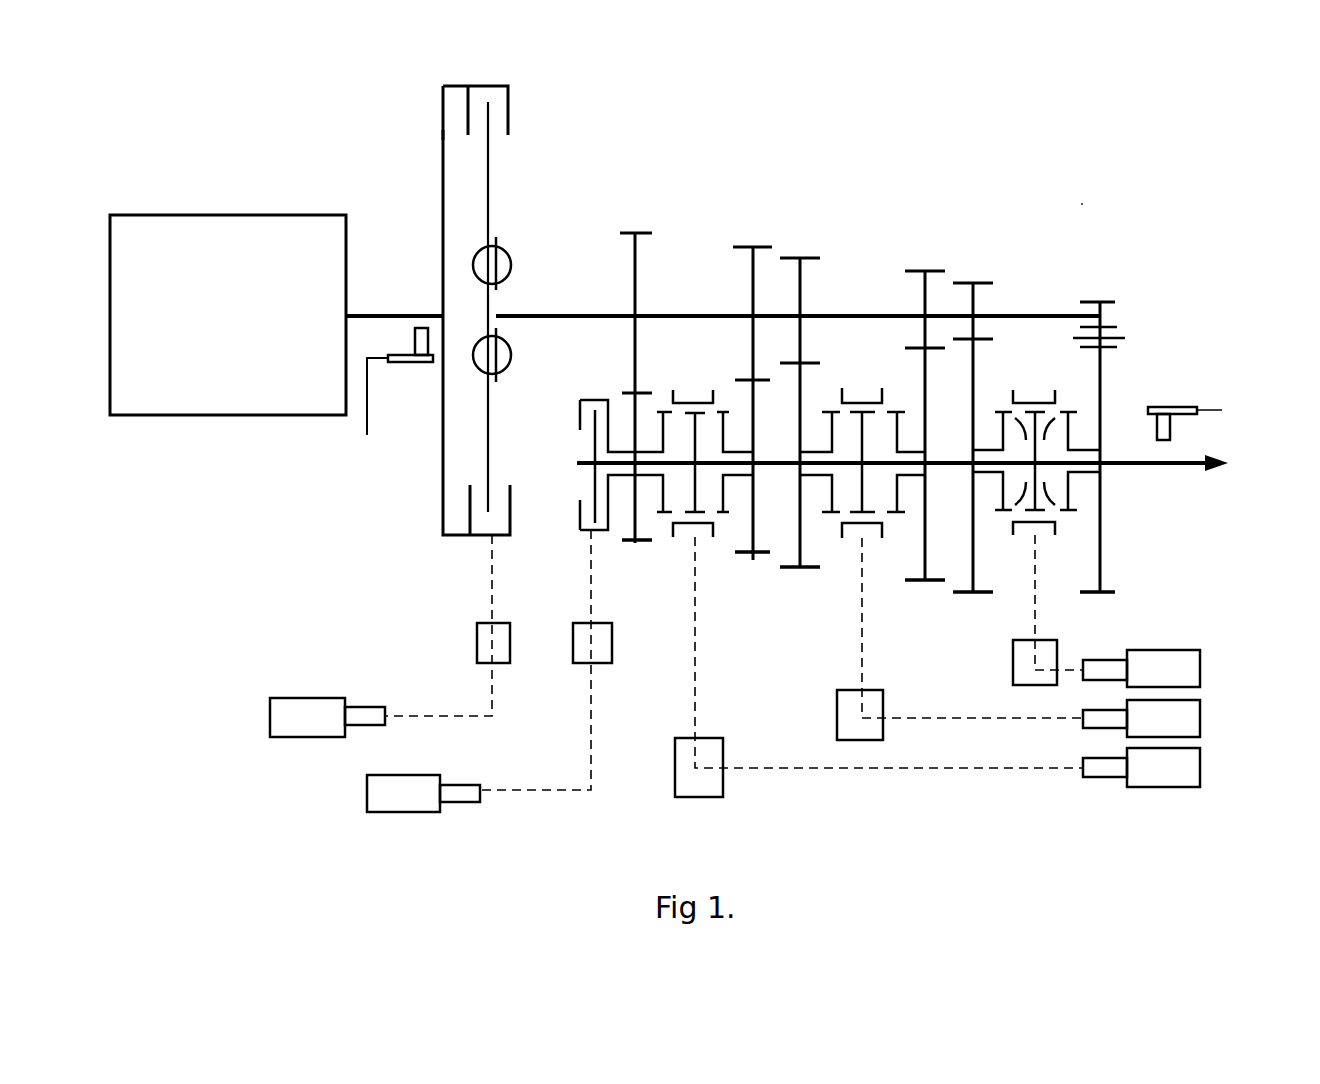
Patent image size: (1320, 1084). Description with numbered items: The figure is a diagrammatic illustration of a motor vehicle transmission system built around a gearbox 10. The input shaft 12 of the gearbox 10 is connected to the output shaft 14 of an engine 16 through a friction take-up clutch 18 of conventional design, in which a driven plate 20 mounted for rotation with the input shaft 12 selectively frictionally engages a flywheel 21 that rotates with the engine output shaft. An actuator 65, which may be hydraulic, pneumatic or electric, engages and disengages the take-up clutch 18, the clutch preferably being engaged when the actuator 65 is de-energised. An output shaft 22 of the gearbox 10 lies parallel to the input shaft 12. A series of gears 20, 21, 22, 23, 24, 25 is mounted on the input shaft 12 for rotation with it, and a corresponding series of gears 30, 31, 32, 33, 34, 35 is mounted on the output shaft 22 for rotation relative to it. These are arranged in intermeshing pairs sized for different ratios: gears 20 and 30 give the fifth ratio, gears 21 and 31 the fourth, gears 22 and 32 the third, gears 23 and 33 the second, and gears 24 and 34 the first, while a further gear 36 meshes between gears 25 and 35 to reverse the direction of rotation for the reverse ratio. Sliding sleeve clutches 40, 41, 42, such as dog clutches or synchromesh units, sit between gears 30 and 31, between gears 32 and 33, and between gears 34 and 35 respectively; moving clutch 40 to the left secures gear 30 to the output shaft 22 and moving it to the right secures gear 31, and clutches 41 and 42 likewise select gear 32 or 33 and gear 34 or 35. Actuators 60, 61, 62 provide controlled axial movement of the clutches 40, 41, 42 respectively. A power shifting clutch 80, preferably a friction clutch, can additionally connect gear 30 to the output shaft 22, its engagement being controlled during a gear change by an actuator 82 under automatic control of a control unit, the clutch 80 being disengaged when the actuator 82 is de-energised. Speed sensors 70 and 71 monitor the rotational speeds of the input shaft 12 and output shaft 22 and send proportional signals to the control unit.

The gearbox 10 is at (1085, 200).
The input shaft 12 is at (578, 312).
The output shaft 14 is at (415, 313).
The engine 16 is at (228, 315).
The friction take-up clutch 18 is at (510, 170).
The driven plate 20 is at (490, 192).
The flywheel 21 is at (443, 132).
The output shaft 22 is at (805, 258).
The gear 23 is at (930, 270).
The gear 24 is at (978, 283).
The gear 25 is at (1085, 300).
The gear 30 is at (635, 543).
The gear 31 is at (753, 562).
The gear 32 is at (800, 567).
The gear 33 is at (925, 580).
The gear 34 is at (973, 592).
The gear 35 is at (1102, 575).
The reverse gear 36 is at (1118, 336).
The sliding sleeve clutch 40 is at (688, 397).
The sliding sleeve clutch 41 is at (857, 400).
The sliding sleeve clutch 42 is at (1026, 400).
The actuator 60 is at (1195, 778).
The actuator 61 is at (1195, 727).
The actuator 62 is at (1195, 672).
The actuator 65 is at (278, 718).
The speed sensor 70 is at (393, 363).
The speed sensor 71 is at (1178, 407).
The power shifting clutch 80 is at (592, 447).
The actuator 82 is at (378, 795).